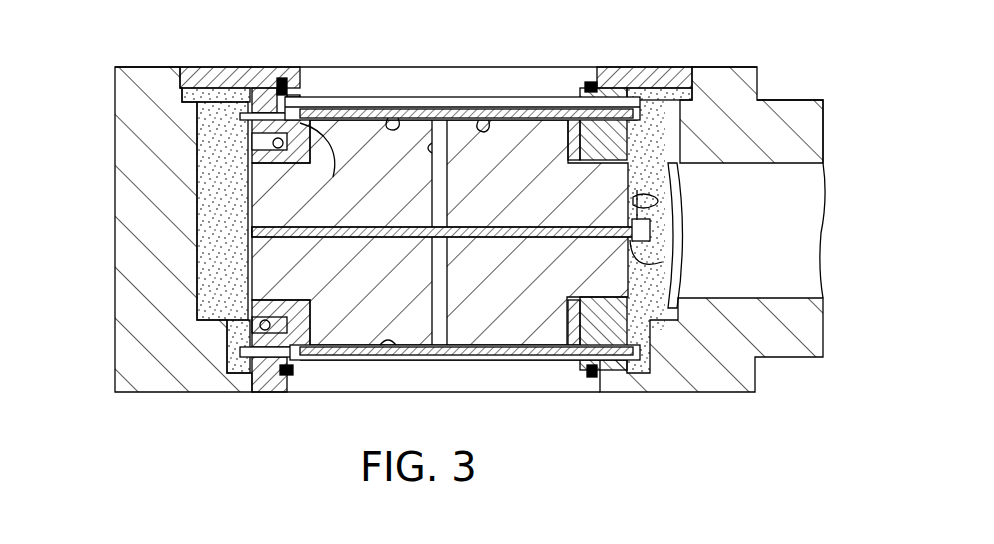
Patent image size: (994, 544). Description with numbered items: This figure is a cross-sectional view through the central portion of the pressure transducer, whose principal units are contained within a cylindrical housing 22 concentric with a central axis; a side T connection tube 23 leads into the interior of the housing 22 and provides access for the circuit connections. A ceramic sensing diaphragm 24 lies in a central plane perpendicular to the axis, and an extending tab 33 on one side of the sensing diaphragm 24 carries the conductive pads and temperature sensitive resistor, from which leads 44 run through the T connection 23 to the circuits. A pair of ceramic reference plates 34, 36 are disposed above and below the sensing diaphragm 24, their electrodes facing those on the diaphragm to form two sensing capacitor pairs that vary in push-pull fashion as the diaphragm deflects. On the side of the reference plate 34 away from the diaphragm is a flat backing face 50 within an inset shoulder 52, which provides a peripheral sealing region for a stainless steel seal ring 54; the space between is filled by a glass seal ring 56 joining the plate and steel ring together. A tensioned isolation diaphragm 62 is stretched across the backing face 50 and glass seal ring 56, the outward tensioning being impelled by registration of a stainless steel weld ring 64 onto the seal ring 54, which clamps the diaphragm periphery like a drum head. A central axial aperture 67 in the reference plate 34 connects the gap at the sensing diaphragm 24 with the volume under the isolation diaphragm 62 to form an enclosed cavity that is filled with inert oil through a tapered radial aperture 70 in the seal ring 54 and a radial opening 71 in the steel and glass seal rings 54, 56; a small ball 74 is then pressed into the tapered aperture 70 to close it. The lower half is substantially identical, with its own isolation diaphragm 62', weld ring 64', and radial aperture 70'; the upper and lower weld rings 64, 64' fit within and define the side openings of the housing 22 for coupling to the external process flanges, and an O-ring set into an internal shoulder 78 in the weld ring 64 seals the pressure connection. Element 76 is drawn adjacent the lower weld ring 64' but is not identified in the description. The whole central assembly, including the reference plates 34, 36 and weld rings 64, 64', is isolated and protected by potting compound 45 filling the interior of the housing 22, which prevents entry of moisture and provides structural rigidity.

The cylindrical housing 22 is at (730, 66).
The side T connection tube 23 is at (781, 100).
The ceramic sensing diaphragm 24 is at (648, 233).
The extending tab 33 is at (664, 262).
The ceramic reference plate 34 is at (527, 177).
The ceramic reference plate 36 is at (500, 320).
The leads 44 is at (670, 192).
The potting compound 45 is at (210, 180).
The flat backing face 50 is at (482, 128).
The inset shoulder 52 is at (341, 118).
The stainless steel seal ring 54 is at (276, 85).
The glass seal ring 56 is at (302, 118).
The tensioned isolation diaphragm 62 is at (466, 99).
The isolation diaphragm 62' is at (465, 382).
The stainless steel weld ring 64 is at (271, 96).
The lower weld ring 64' is at (241, 362).
The central axial aperture 67 is at (453, 118).
The tapered radial aperture 70 is at (237, 75).
The tapered radial aperture 70' is at (261, 386).
The radial opening 71 is at (298, 100).
The small ball 74 is at (252, 146).
The seal 76 is at (293, 375).
The internal shoulder 78 is at (597, 376).